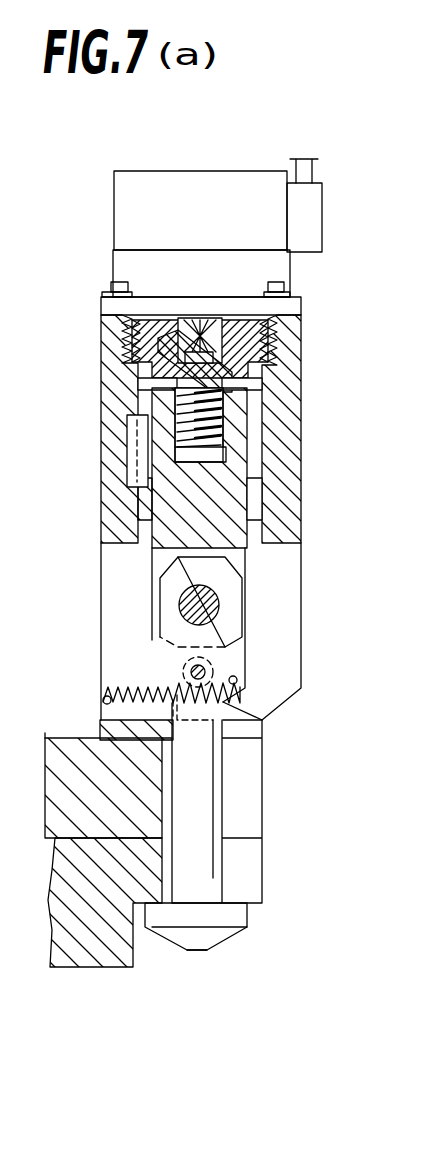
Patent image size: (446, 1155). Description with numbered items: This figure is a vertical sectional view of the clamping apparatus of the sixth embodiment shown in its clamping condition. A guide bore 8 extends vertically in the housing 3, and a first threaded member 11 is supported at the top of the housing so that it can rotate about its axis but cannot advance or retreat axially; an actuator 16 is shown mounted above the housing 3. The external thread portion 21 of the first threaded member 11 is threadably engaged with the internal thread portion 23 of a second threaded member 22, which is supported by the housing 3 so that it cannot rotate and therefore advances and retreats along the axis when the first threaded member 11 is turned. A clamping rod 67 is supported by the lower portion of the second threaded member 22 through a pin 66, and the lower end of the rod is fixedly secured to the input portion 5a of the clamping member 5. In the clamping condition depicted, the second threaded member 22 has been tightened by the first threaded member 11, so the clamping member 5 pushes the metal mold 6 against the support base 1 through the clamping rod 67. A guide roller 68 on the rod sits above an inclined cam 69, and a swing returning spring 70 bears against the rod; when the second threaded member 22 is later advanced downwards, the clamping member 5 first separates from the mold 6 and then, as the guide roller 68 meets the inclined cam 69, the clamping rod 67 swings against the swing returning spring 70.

The support base 1 is at (68, 745).
The housing 3 is at (303, 423).
The clamping member 5 is at (243, 918).
The input portion 5a is at (210, 914).
The metal mold 6 is at (105, 948).
The guide bore 8 is at (264, 498).
The first threaded member 11 is at (222, 316).
The solenoid 16 is at (297, 272).
The external thread portion 21 is at (226, 402).
The second threaded member 22 is at (153, 495).
The internal thread portion 23 is at (172, 411).
The pin 66 is at (215, 605).
The clamping rod 67 is at (229, 778).
The guide roller 68 is at (212, 668).
The inclined cam 69 is at (249, 714).
The swing returning spring 70 is at (104, 697).